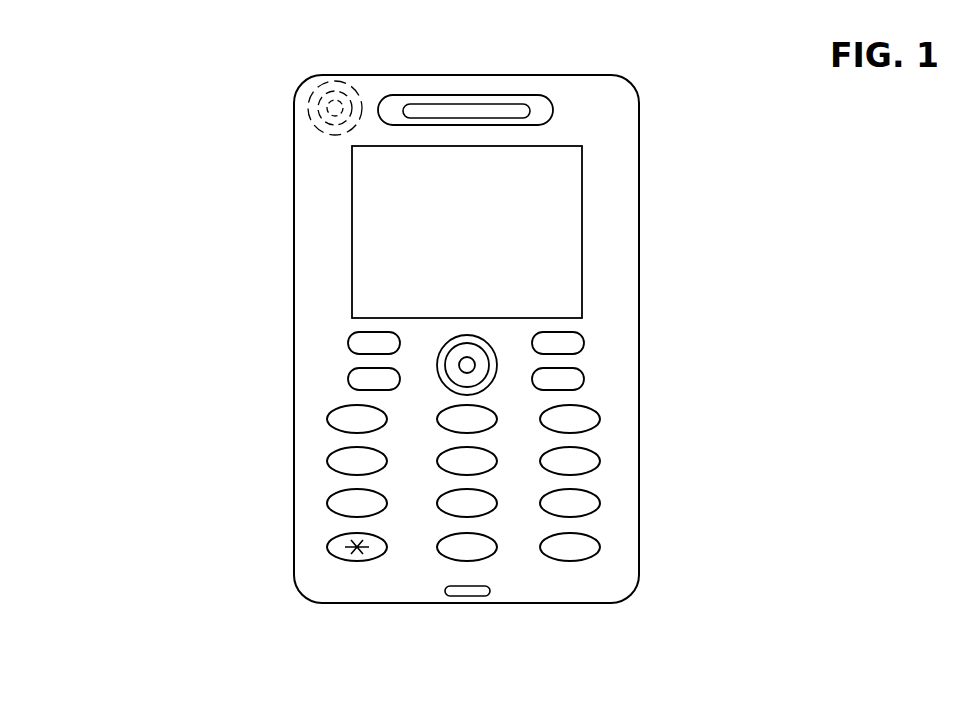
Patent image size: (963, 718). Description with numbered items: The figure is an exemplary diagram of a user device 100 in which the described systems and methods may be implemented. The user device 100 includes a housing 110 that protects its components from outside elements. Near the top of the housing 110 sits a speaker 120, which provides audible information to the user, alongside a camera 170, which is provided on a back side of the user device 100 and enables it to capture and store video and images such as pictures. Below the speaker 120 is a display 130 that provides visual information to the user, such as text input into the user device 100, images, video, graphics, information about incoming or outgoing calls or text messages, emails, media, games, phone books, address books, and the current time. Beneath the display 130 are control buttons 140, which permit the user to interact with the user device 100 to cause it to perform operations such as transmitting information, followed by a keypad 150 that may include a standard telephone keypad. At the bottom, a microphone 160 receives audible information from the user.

The user device 100 is at (92, 31).
The housing 110 is at (294, 340).
The speaker 120 is at (468, 95).
The display 130 is at (582, 232).
The control buttons 140 is at (600, 390).
The keypad 150 is at (610, 563).
The microphone 160 is at (468, 597).
The camera 170 is at (355, 82).